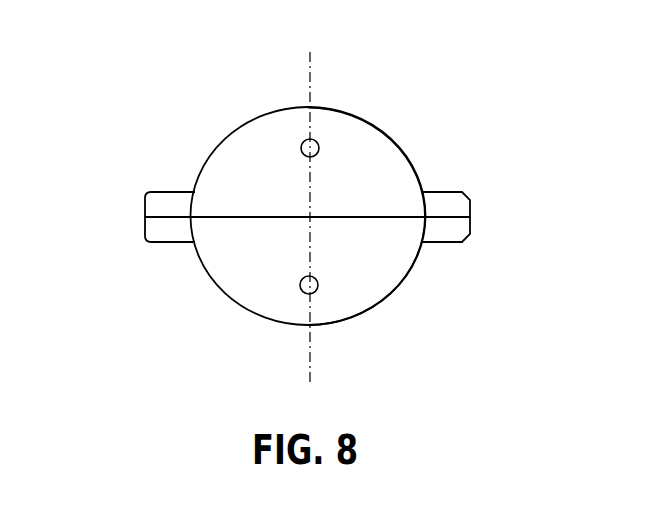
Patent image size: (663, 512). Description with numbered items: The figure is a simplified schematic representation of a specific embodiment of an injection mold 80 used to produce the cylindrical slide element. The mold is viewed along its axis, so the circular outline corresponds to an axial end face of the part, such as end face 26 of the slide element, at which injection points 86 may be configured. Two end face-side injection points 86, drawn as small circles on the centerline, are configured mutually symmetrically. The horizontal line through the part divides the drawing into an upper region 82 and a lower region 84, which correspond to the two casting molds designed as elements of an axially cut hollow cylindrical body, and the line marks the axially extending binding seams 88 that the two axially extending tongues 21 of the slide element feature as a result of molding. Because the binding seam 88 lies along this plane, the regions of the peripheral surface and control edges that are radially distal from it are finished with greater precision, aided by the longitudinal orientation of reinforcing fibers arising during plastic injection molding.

The injection mold 80 is at (152, 118).
The left end face 26 is at (254, 155).
The first half 82 is at (368, 152).
The second half 84 is at (367, 276).
The injection points 86 is at (318, 142).
The binding seams 88 is at (147, 217).
The tongues 21 is at (136, 201).